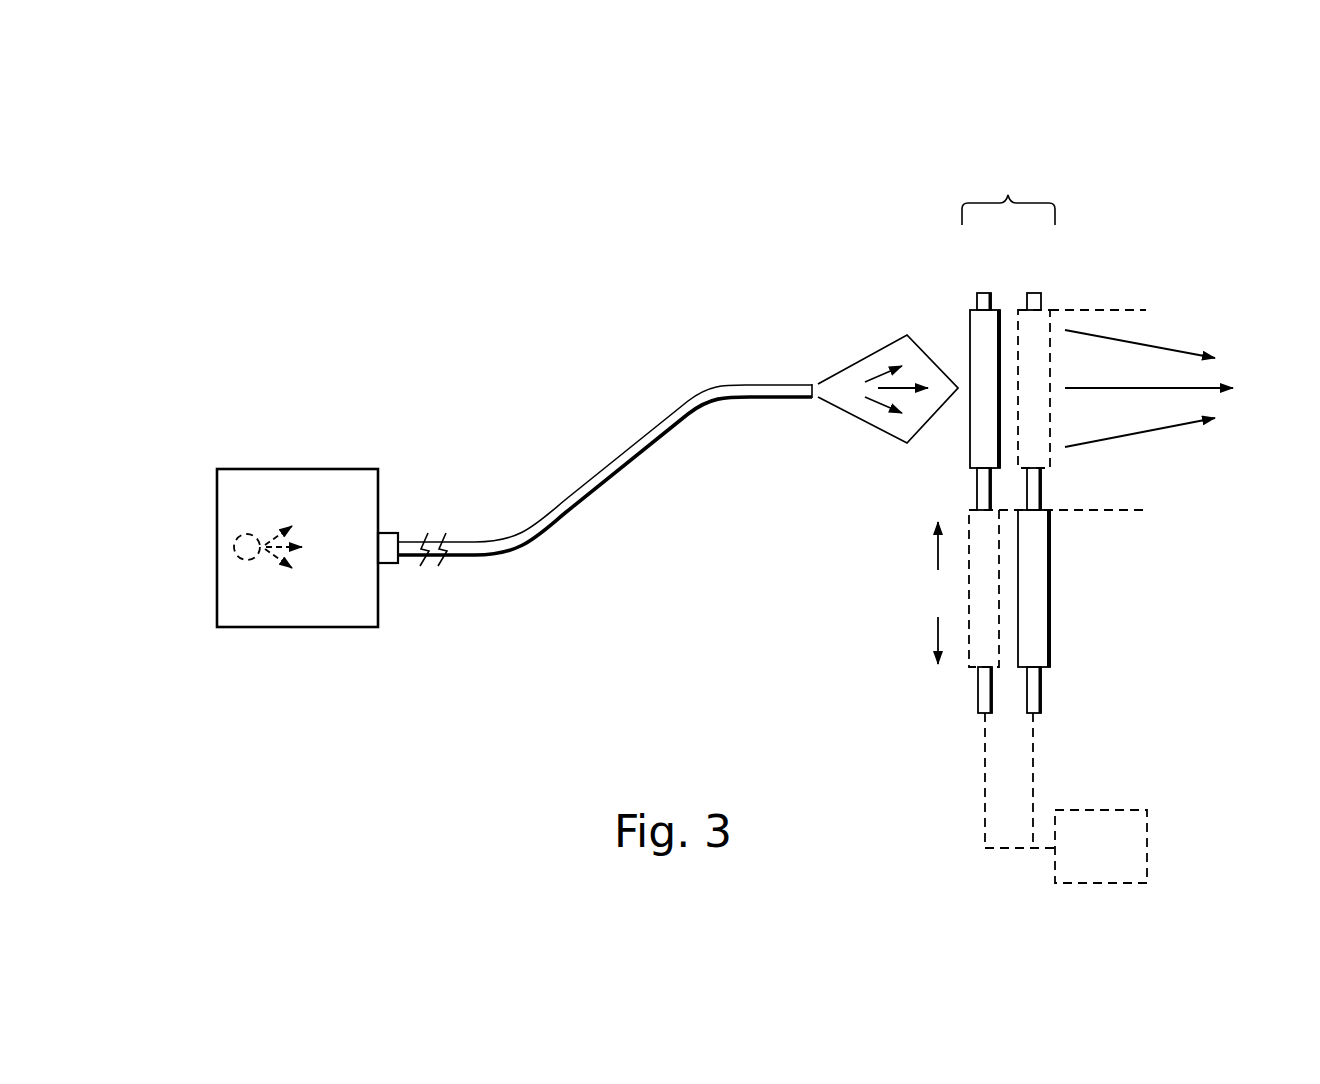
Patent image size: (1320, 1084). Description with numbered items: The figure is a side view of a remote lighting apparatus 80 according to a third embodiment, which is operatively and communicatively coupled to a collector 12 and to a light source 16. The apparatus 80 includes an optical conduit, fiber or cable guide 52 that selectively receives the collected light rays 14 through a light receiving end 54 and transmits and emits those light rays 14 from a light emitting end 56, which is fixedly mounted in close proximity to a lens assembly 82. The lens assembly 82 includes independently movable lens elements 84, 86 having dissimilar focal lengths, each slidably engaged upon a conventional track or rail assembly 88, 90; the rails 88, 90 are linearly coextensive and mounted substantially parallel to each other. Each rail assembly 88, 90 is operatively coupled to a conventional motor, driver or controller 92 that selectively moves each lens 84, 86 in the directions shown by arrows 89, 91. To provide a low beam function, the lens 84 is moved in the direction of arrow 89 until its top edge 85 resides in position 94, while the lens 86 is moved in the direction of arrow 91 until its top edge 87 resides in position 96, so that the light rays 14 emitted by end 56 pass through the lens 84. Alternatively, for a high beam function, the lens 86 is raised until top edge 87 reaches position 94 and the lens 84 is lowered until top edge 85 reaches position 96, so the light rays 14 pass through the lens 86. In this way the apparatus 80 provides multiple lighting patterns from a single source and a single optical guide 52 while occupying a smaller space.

The collector 12 is at (341, 469).
The light rays 14 is at (278, 560).
The light source 16 is at (235, 538).
The optical guide 52 is at (589, 491).
The light receiving end 54 is at (400, 542).
The light emitting end 56 is at (818, 383).
The remote lighting apparatus 80 is at (556, 269).
The lens assembly 82 is at (1008, 192).
The lens element 84 is at (970, 332).
The top edge 85 is at (975, 308).
The lens element 86 is at (1050, 612).
The top edge 87 is at (1043, 500).
The rail assembly 88 is at (978, 690).
The arrow 89 is at (935, 548).
The rail assembly 90 is at (1050, 693).
The arrow 91 is at (935, 632).
The motor/driver/controller 92 is at (1066, 798).
The position 94 is at (1132, 308).
The position 96 is at (1128, 512).